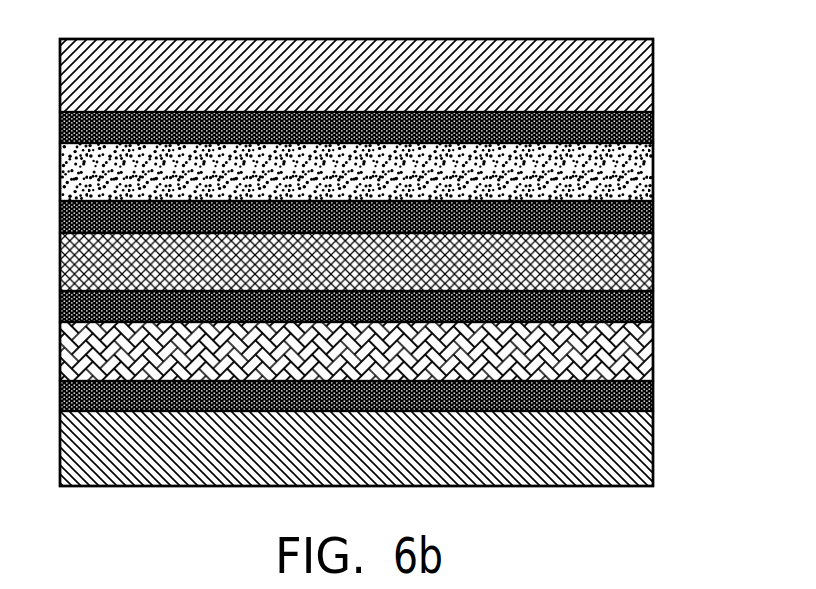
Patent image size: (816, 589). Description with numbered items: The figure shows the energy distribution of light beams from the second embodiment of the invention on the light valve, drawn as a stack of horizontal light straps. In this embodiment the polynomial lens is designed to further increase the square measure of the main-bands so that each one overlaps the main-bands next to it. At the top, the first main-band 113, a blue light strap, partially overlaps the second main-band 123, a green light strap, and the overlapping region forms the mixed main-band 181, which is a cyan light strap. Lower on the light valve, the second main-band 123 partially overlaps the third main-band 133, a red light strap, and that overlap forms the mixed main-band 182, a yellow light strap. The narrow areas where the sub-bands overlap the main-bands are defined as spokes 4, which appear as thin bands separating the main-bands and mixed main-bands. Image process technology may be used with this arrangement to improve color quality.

The first main-band 113 is at (640, 55).
The spokes 4 is at (640, 120).
The mixed main-band 181 is at (640, 158).
The second main-band 123 is at (640, 252).
The mixed main-band 182 is at (640, 338).
The third main-band 133 is at (640, 433).